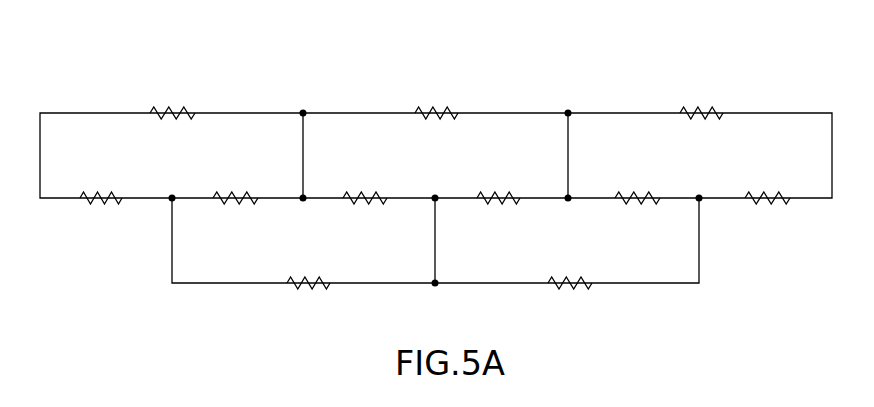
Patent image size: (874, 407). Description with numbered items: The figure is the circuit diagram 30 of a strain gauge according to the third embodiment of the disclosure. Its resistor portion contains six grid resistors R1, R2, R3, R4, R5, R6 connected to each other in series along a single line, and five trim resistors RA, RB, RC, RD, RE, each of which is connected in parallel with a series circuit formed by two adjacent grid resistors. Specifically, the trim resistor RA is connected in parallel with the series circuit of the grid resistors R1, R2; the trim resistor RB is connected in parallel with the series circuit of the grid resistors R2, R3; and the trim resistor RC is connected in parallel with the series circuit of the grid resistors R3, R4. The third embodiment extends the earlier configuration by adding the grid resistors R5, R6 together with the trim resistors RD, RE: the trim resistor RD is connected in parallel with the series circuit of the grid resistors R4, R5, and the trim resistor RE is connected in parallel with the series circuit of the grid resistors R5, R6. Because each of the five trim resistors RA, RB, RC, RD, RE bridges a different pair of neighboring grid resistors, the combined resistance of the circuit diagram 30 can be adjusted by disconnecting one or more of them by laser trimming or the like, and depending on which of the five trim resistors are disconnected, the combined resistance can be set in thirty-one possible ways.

The circuit diagram 30 is at (90, 78).
The trim resistor RA is at (172, 98).
The trim resistor RC is at (436, 98).
The trim resistor RE is at (701, 98).
The grid resistor R1 is at (101, 183).
The grid resistor R2 is at (235, 183).
The grid resistor R3 is at (365, 183).
The grid resistor R4 is at (498, 183).
The grid resistor R5 is at (637, 183).
The grid resistor R6 is at (767, 183).
The trim resistor RB is at (308, 302).
The trim resistor RD is at (570, 302).